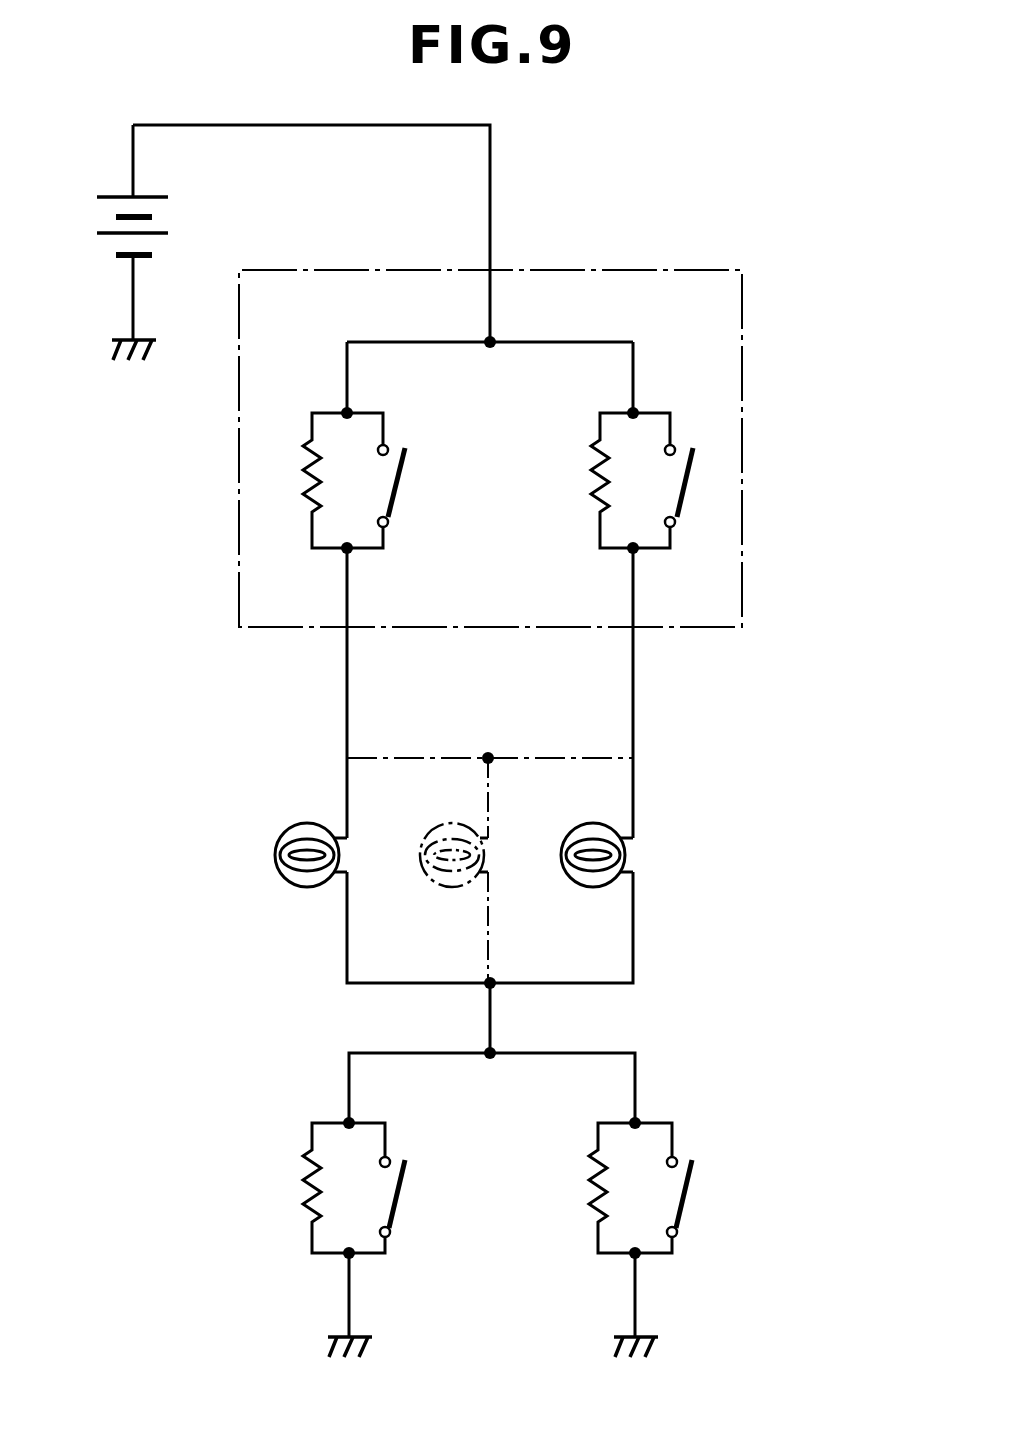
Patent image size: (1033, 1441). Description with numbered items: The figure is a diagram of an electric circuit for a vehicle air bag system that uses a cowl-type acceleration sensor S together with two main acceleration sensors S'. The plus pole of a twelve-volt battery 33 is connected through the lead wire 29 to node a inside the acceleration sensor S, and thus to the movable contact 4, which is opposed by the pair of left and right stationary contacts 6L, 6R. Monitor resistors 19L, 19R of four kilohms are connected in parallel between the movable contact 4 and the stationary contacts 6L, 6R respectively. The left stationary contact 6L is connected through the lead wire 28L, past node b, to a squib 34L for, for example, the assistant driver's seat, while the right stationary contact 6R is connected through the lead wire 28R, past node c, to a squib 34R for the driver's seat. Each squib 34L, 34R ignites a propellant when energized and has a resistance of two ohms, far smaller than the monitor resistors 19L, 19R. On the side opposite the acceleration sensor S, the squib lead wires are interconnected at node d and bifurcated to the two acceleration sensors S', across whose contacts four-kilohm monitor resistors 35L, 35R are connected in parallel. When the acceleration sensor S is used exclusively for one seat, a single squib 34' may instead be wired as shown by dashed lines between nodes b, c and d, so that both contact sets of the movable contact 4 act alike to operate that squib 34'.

The lead wire 29 is at (345, 125).
The battery 33 is at (155, 193).
The acceleration sensor S is at (502, 402).
The node a is at (491, 340).
The movable contact 4 is at (388, 446).
The left stationary contact 6L is at (390, 522).
The right stationary contact 6R is at (706, 499).
The monitor resistor 19L is at (300, 505).
The monitor resistor 19R is at (588, 505).
The lead wire 28L is at (346, 650).
The lead wire 28R is at (635, 672).
The node b is at (349, 735).
The node c is at (633, 724).
The squib 34L is at (286, 830).
The squib 34' is at (438, 870).
The squib 34R is at (576, 832).
The node d is at (493, 980).
The acceleration sensor S' is at (545, 1173).
The monitor resistor 35L is at (295, 1190).
The monitor resistor 35R is at (583, 1196).